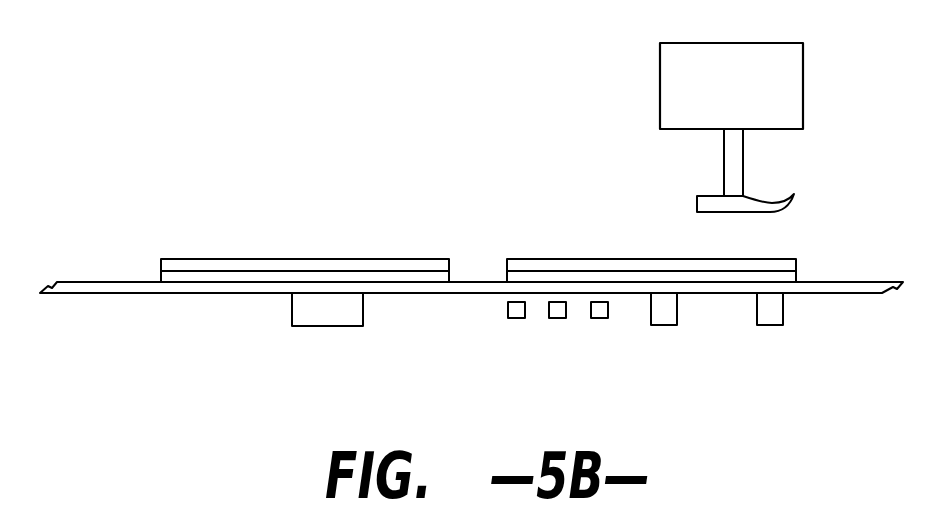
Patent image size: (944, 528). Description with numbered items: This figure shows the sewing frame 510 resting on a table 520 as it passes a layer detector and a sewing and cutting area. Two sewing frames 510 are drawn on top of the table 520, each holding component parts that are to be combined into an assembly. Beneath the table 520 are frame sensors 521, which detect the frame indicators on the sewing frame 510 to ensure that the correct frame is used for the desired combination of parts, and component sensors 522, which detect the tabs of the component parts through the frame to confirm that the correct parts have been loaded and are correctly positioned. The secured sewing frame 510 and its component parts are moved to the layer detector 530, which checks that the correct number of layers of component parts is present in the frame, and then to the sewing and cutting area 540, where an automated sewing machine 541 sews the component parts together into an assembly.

The sewing frame 510 is at (228, 259).
The table 520 is at (88, 281).
The frame sensors 521 is at (599, 318).
The component sensors 522 is at (662, 326).
The layer detector 530 is at (313, 326).
The sewing and cutting area 540 is at (830, 262).
The automated sewing machine 541 is at (743, 146).